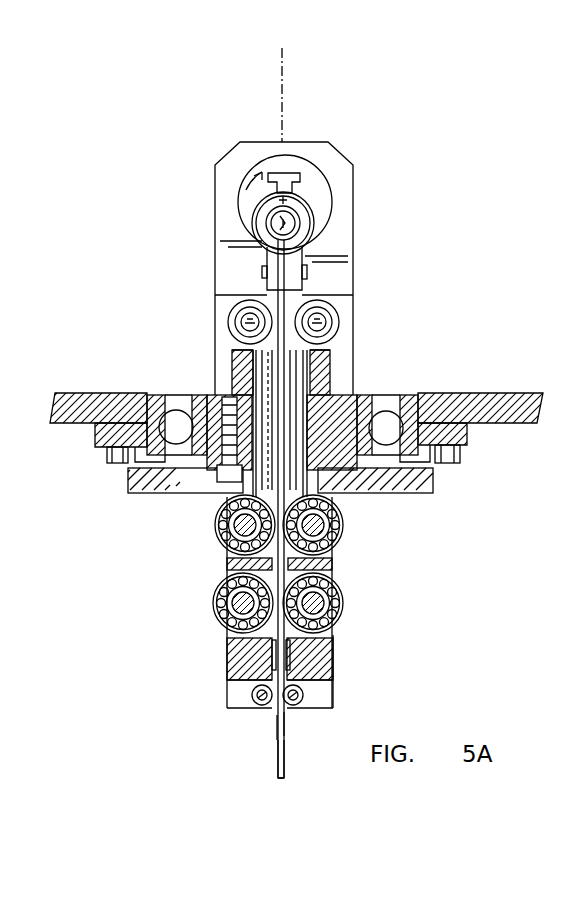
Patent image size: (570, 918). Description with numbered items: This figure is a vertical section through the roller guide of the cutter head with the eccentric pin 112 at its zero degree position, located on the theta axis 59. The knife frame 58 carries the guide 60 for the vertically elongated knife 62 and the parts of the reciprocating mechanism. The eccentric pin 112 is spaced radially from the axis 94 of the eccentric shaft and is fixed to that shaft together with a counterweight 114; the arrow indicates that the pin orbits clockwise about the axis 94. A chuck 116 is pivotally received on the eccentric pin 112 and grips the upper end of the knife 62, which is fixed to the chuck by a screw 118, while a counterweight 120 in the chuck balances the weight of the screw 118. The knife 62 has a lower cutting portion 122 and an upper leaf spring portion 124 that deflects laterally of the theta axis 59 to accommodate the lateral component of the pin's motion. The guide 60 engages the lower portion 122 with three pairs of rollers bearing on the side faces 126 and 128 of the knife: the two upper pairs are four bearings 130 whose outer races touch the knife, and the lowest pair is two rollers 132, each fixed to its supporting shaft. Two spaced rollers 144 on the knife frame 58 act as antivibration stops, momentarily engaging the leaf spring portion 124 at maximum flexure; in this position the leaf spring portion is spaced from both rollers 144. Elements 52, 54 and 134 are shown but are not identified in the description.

The bearing assembly 52 is at (388, 396).
The mounting plate 54 is at (495, 393).
The knife frame 58 is at (344, 348).
The theta axis 59 is at (284, 62).
The guide 60 is at (322, 650).
The knife 62 is at (285, 747).
The axis 94 is at (300, 198).
The eccentric pin 112 is at (296, 222).
The counterweight 114 is at (320, 172).
The chuck 116 is at (303, 240).
The screw 118 is at (308, 273).
The counterweight 120 is at (283, 176).
The lower cutting portion 122 is at (277, 770).
The leaf spring portion 124 is at (285, 390).
The side face 126 is at (277, 726).
The side face 128 is at (285, 722).
The bearings 130 is at (337, 587).
The rollers 132 is at (303, 694).
The guide insert 134 is at (270, 651).
The rollers 144 is at (340, 314).